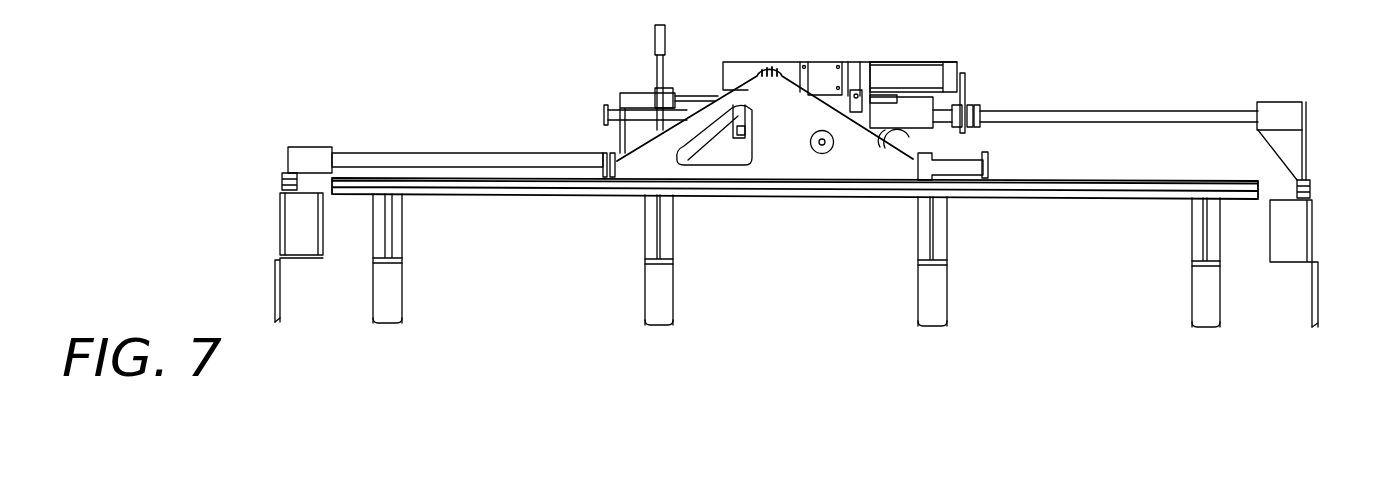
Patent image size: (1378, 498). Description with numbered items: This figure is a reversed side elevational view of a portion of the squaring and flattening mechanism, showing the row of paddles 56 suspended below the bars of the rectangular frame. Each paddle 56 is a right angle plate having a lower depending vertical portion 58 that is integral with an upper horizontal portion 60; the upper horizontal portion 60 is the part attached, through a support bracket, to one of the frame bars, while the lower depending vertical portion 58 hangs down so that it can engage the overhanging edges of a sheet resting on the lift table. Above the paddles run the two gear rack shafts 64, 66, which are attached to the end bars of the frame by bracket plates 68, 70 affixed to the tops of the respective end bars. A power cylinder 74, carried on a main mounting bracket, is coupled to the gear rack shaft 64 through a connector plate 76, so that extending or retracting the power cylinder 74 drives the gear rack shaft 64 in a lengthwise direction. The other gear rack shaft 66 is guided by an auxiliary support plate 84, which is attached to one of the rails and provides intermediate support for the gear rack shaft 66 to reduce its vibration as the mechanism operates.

The paddle 56 is at (256, 265).
The lower depending vertical portion 58 is at (379, 311).
The upper horizontal portion 60 is at (392, 262).
The gear rack shaft 64 is at (1108, 111).
The gear rack shaft 66 is at (421, 157).
The bracket plate 68 is at (1305, 120).
The bracket plate 70 is at (288, 160).
The power cylinder 74 is at (912, 62).
The connector plate 76 is at (968, 87).
The auxiliary support plate 84 is at (655, 50).